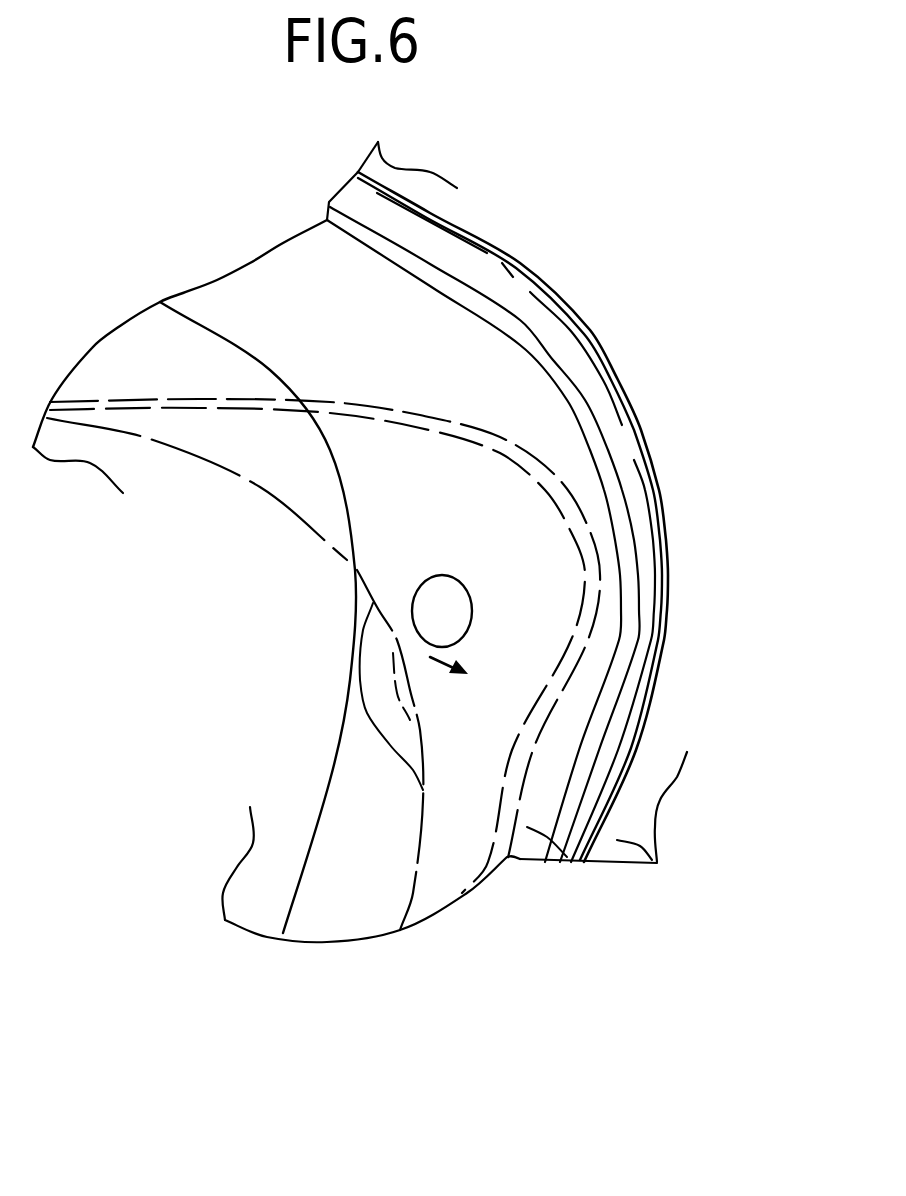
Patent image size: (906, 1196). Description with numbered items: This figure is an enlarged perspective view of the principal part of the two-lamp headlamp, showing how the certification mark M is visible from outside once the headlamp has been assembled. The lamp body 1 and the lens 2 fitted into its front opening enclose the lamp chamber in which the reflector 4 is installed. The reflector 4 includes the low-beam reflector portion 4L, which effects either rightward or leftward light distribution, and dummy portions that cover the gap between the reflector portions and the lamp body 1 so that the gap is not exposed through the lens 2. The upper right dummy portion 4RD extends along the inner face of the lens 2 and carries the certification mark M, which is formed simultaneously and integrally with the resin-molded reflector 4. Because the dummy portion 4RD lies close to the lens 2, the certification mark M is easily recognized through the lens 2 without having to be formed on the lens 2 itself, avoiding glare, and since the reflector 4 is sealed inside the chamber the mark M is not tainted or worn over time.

The lamp body 1 is at (655, 862).
The lens 2 is at (250, 903).
The reflector 4 is at (575, 863).
The low-beam reflector portion 4L is at (397, 870).
The upper right dummy portion 4RD is at (678, 667).
The certification mark M is at (483, 508).